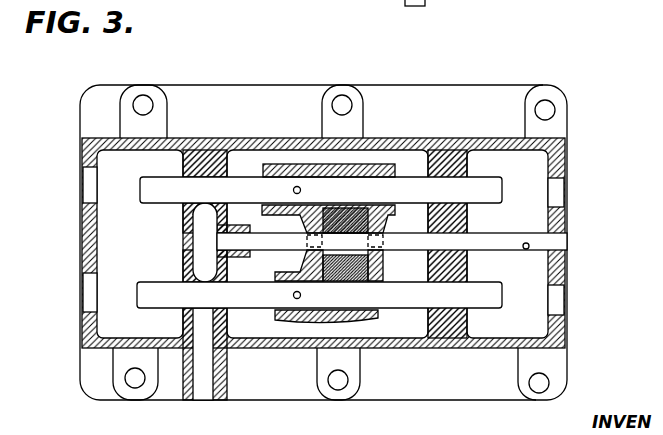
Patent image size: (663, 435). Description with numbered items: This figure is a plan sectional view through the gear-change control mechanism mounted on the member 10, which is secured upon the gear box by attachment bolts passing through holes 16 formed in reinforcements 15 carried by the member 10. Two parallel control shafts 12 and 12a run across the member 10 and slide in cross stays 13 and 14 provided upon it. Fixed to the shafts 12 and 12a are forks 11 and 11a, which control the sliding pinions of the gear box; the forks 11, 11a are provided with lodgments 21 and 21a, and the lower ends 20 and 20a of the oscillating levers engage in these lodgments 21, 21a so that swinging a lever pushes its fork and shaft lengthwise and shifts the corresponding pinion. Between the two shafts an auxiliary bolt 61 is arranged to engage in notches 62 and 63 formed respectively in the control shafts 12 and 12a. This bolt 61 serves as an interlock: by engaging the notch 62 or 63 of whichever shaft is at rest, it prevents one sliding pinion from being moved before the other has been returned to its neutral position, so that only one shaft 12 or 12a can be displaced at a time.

The member 10 is at (484, 390).
The fork 11 is at (368, 318).
The fork 11a is at (377, 174).
The shaft 12 is at (488, 298).
The shaft 12a is at (490, 192).
The cross stay 13 is at (457, 222).
The cross stay 14 is at (180, 260).
The reinforcement 15 is at (553, 372).
The hole 16 is at (538, 387).
The lower end of lever 20 is at (337, 272).
The lower end of lever 20a is at (338, 220).
The lodgment 21 is at (348, 272).
The lodgment 21a is at (357, 210).
The auxiliary bolt 61 is at (202, 233).
The notch 62 is at (203, 282).
The notch 63 is at (203, 197).